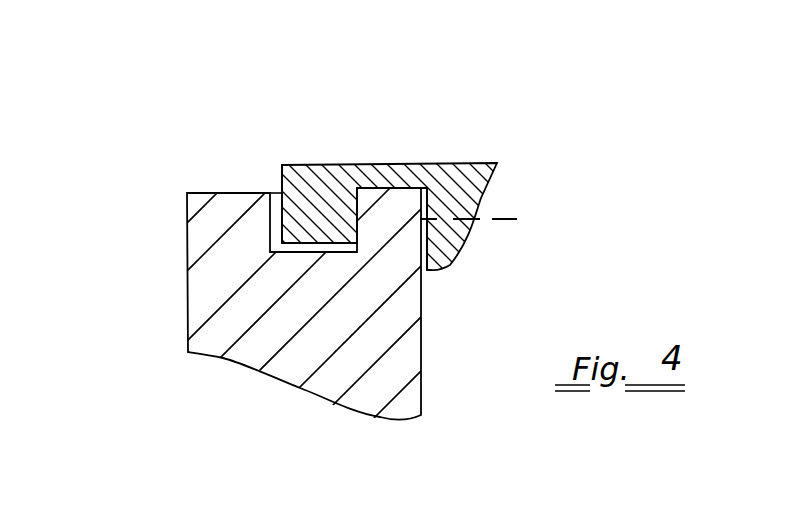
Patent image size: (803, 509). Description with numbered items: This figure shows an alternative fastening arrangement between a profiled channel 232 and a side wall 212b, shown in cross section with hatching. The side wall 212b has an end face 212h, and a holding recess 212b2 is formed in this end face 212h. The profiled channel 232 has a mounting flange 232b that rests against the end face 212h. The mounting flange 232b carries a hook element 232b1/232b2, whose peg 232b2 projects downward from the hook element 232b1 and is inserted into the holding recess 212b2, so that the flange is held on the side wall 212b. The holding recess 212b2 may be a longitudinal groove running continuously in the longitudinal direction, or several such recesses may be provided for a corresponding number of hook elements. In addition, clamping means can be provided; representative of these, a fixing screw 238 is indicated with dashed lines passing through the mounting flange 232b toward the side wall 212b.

The side wall 212b is at (213, 327).
The end face 212h is at (395, 165).
The holding recess 212b2 is at (261, 252).
The profiled channel 232 is at (492, 190).
The mounting flange 232b is at (420, 163).
The hook element 232b1 is at (359, 164).
The peg 232b2 is at (300, 212).
The fixing screw 238 is at (503, 219).